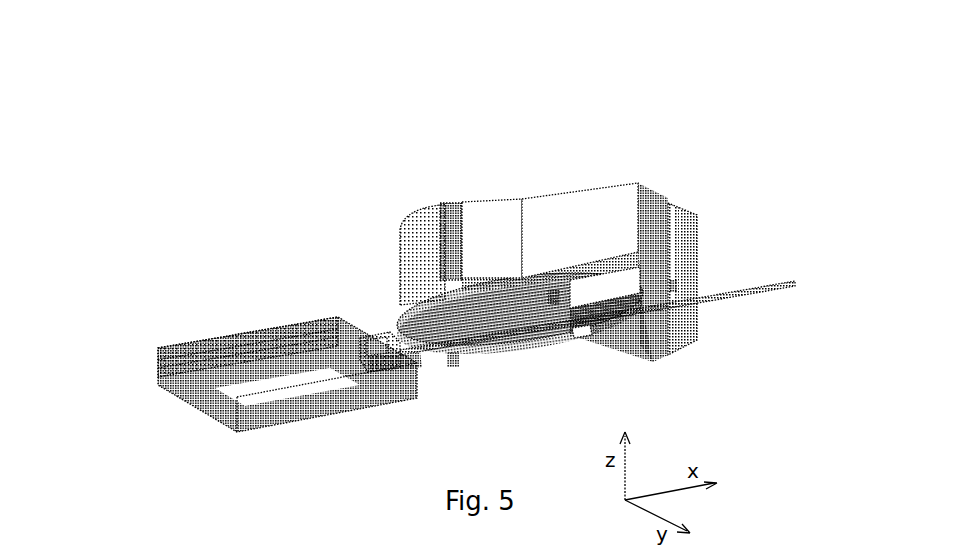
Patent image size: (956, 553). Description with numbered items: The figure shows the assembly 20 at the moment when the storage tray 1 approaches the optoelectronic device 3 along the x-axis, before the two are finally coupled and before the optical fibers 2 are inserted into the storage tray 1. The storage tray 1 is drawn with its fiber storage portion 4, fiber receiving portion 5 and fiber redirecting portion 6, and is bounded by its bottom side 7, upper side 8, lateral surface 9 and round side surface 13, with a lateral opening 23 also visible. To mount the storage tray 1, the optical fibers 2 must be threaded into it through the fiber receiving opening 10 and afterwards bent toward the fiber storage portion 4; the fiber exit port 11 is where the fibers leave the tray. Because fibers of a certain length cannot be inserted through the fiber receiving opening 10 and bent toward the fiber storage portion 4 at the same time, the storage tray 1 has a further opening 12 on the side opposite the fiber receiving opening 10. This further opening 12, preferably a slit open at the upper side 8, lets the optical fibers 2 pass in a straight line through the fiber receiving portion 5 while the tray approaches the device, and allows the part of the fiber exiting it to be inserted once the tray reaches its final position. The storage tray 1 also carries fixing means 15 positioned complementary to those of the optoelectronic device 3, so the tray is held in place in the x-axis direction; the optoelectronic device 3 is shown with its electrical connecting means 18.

The storage tray 1 is at (631, 226).
The optical fibers 2 is at (795, 285).
The optoelectronic device 3 is at (232, 390).
The fiber storage portion 4 is at (492, 238).
The fiber receiving portion 5 is at (605, 287).
The fiber redirecting portion 6 is at (580, 230).
The bottom side 7 is at (487, 313).
The upper side 8 is at (208, 335).
The lateral surface 9 is at (400, 374).
The fiber receiving opening 10 is at (602, 323).
The fiber exit port 11 is at (390, 340).
The further opening 12 is at (672, 285).
The round side surface 13 is at (693, 270).
The fixing means 15 is at (452, 362).
The electrical connecting means 18 is at (262, 413).
The assembly 20 is at (263, 139).
The lateral opening 23 is at (450, 214).